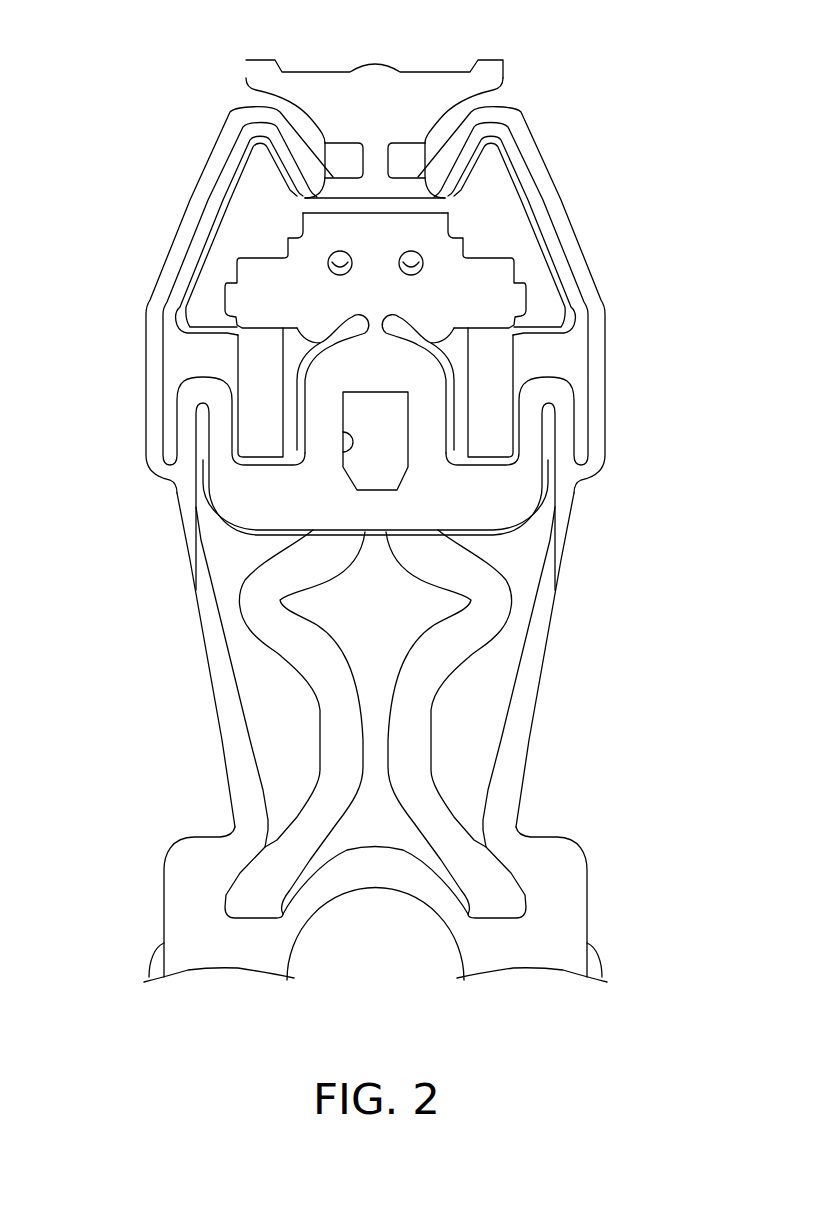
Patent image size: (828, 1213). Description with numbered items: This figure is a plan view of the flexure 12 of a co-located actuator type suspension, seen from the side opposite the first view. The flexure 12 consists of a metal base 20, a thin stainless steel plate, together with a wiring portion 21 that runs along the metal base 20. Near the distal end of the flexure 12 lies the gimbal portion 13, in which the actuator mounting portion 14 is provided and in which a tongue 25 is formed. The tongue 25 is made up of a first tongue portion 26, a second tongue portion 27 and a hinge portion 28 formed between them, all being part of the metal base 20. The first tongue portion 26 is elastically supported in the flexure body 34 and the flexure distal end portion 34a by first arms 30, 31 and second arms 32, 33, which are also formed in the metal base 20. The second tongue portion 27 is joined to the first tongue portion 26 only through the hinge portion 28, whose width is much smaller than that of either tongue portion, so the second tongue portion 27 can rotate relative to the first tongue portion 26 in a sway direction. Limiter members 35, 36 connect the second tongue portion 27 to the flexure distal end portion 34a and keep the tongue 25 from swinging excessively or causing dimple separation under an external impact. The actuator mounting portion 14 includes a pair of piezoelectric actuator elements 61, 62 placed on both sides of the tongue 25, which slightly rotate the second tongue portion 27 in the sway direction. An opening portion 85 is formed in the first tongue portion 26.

The flexure 12 is at (152, 941).
The gimbal portion 13 is at (493, 232).
The actuator mounting portion 14 is at (520, 353).
The metal base 20 is at (192, 850).
The wiring portion 21 is at (323, 737).
The tongue 25 is at (520, 518).
The first tongue portion 26 is at (433, 430).
The second tongue portion 27 is at (457, 293).
The hinge portion 28 is at (377, 332).
The first arm 30 is at (527, 700).
The first arm 31 is at (208, 683).
The second arm 32 is at (573, 233).
The second arm 33 is at (183, 232).
The flexure body 34 is at (245, 960).
The flexure distal end portion 34a is at (420, 87).
The limiter member 35 is at (520, 173).
The limiter member 36 is at (227, 180).
The actuator element 61 is at (497, 402).
The actuator element 62 is at (250, 370).
The opening portion 85 is at (343, 458).